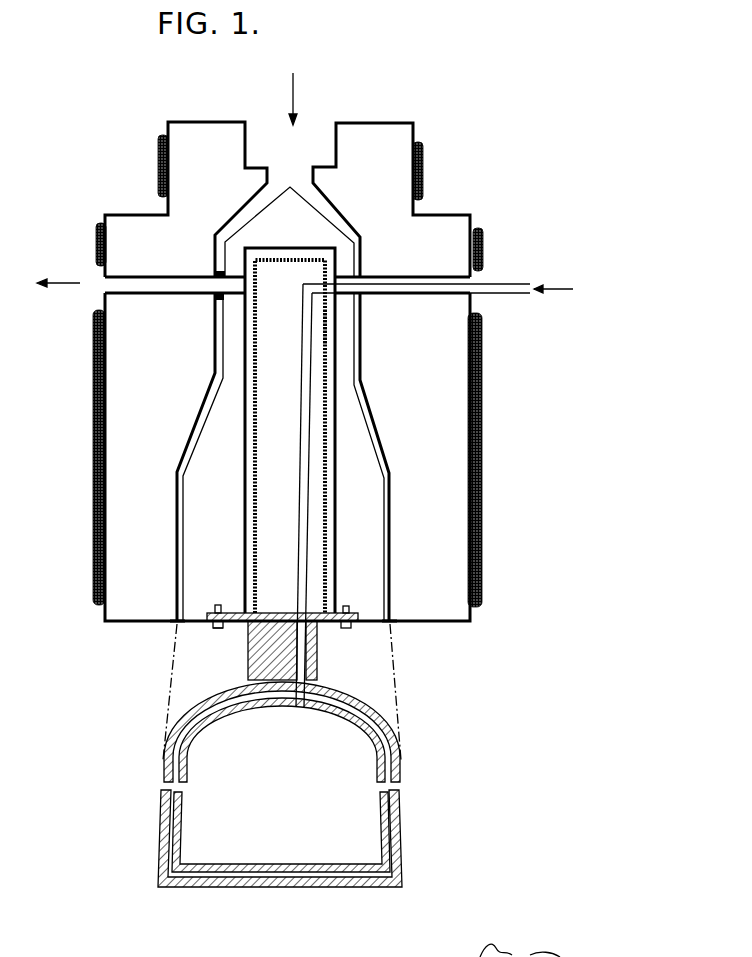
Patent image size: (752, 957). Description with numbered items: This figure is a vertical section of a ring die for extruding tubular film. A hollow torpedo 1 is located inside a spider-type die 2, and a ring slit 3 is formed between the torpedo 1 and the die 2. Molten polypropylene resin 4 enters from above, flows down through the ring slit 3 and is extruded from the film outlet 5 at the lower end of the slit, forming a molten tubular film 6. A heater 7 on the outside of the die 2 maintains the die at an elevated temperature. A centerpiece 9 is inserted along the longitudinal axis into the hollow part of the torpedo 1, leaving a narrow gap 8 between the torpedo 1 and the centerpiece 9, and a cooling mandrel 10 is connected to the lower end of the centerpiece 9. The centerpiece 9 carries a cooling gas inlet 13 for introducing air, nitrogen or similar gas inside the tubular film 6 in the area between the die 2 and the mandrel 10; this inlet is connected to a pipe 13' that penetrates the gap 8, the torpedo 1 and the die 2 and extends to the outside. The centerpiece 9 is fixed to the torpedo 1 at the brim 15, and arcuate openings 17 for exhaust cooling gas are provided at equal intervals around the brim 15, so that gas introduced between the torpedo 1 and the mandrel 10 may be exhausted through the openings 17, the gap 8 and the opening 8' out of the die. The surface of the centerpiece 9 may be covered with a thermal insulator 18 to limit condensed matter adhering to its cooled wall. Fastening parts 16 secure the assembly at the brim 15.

The hollow torpedo 1 is at (370, 520).
The spider-type die 2 is at (453, 353).
The ring slit 3 is at (178, 517).
The molten polypropylene resin 4 is at (291, 87).
The film outlet 5 is at (176, 623).
The molten tubular film 6 is at (168, 712).
The heater 7 is at (478, 423).
The narrow gap 8 is at (344, 436).
The opening 8' is at (78, 303).
The centerpiece 9 is at (268, 405).
The cooling mandrel 10 is at (393, 775).
The cooling gas inlet 13 is at (362, 495).
The pipe 13' is at (438, 259).
The brim 15 is at (212, 624).
The bolt 16 is at (218, 605).
The arcuate openings 17 is at (327, 623).
The thermal insulator 18 is at (322, 327).